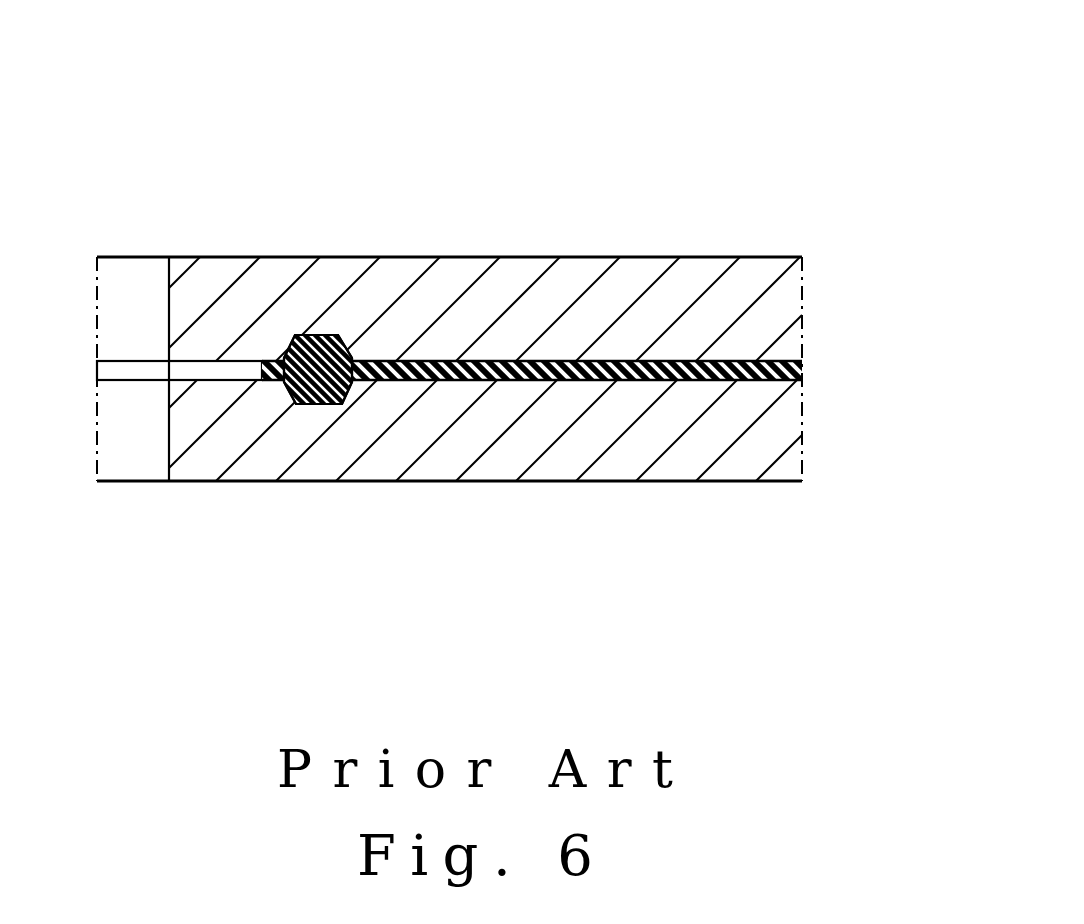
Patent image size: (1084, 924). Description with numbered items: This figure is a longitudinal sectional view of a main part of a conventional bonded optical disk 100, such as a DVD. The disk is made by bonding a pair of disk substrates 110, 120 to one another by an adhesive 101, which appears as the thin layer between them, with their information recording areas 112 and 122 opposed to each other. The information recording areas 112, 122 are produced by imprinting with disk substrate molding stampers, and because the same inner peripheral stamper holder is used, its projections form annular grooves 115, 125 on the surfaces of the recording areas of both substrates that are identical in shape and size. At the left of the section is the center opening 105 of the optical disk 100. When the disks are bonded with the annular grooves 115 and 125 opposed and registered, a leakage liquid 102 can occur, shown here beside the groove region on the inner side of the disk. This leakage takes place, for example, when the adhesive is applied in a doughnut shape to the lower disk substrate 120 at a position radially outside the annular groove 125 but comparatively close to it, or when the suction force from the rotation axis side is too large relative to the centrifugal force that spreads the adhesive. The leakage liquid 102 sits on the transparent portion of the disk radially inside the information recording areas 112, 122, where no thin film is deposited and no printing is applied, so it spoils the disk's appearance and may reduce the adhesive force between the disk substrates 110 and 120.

The bonded optical disk 100 is at (685, 232).
The adhesive 101 is at (802, 380).
The leakage liquid 102 is at (267, 380).
The center opening 105 is at (169, 302).
The disk substrate 110 is at (720, 327).
The information recording area 112 is at (740, 360).
The annular groove 115 is at (335, 340).
The disk substrate 120 is at (722, 445).
The information recording area 122 is at (740, 381).
The annular groove 125 is at (307, 404).